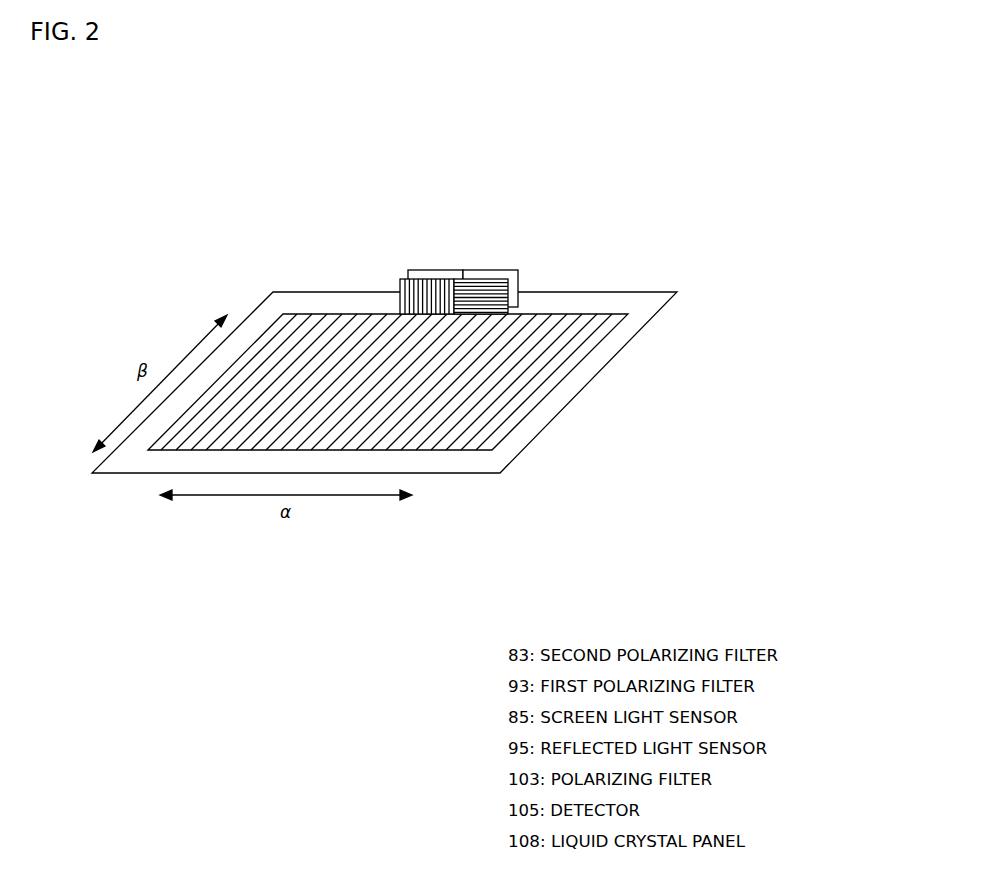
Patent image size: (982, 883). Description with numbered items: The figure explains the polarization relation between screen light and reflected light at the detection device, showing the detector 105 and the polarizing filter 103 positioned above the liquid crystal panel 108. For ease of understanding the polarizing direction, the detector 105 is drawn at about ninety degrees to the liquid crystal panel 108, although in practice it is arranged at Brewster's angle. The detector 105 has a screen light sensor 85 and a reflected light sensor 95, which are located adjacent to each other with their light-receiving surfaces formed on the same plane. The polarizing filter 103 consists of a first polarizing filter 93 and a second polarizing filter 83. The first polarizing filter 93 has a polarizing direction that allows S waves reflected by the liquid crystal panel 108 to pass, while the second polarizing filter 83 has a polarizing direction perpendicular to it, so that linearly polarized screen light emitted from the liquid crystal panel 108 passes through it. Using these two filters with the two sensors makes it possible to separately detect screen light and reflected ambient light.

The second polarizing filter 83 is at (400, 279).
The first polarizing filter 93 is at (507, 290).
The screen light sensor 85 is at (435, 270).
The reflected light sensor 95 is at (490, 270).
The polarizing filter 103 is at (456, 77).
The detector 105 is at (517, 213).
The liquid crystal panel 108 is at (505, 398).